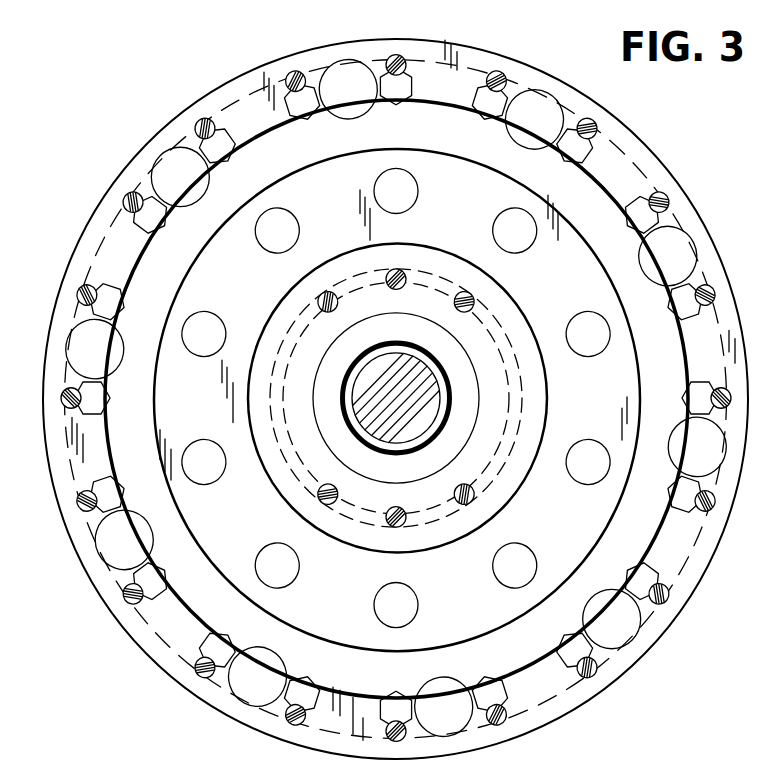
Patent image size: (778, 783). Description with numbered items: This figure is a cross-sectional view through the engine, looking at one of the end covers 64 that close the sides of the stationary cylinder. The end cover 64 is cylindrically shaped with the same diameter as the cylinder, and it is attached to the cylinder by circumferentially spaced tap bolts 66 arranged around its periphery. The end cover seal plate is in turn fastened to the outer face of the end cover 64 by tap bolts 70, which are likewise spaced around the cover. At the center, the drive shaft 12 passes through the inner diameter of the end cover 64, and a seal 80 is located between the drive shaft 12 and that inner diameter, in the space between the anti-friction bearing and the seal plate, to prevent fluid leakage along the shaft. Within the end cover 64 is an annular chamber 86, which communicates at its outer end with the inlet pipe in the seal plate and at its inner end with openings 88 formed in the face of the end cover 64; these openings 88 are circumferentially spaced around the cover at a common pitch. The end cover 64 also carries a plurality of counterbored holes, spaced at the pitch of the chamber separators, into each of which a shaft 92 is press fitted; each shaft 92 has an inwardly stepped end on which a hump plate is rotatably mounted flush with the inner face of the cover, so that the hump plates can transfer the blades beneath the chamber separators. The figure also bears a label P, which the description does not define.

The drive shaft 12 is at (396, 379).
The end cover 64 is at (395, 399).
The tap bolts 66 is at (396, 398).
The tap bolts 70 is at (396, 378).
The seal 80 is at (397, 398).
The annular chamber 86 is at (352, 399).
The openings 88 is at (396, 392).
The shaft 92 is at (397, 400).
The pitch point P is at (393, 399).